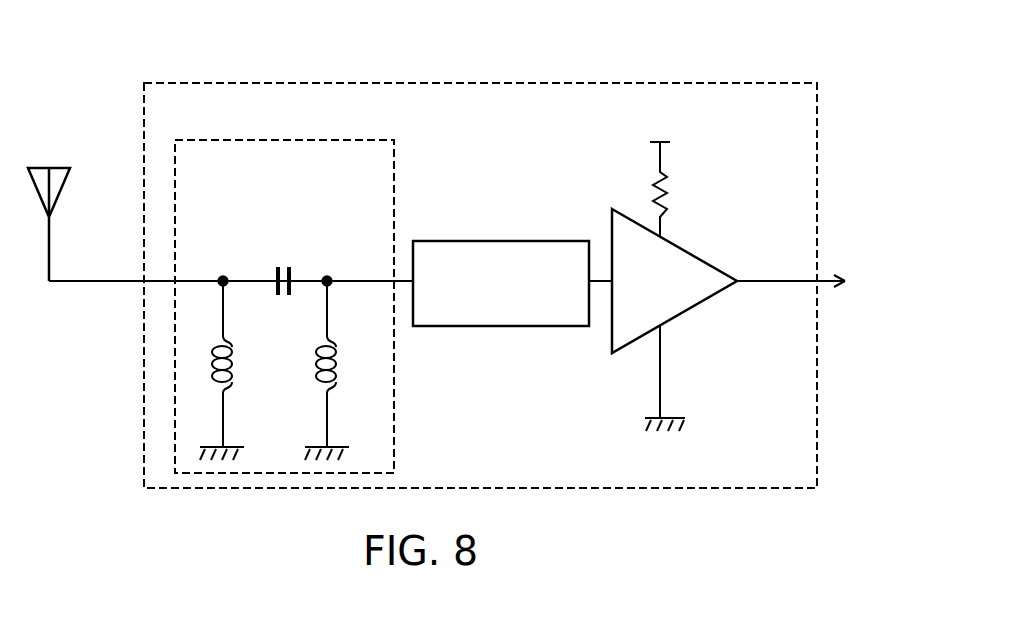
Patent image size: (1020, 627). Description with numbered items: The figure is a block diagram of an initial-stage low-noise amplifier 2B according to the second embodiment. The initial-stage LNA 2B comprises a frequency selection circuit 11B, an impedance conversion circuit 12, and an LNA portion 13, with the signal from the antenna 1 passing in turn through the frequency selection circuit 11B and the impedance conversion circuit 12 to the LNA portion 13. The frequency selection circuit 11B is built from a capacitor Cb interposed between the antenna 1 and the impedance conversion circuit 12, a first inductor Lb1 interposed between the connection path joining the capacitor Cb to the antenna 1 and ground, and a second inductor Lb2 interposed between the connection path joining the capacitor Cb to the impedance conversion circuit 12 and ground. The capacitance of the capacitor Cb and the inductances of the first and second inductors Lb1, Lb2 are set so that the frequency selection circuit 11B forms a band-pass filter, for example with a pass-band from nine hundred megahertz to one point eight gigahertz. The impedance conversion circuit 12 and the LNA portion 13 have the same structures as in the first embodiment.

The antenna 1 is at (62, 167).
The initial-stage LNA 2B is at (638, 82).
The frequency selection circuit 11B is at (393, 197).
The impedance conversion circuit 12 is at (543, 240).
The LNA portion 13 is at (700, 258).
The capacitor Cb is at (275, 266).
The first inductor Lb1 is at (237, 370).
The second inductor Lb2 is at (342, 370).